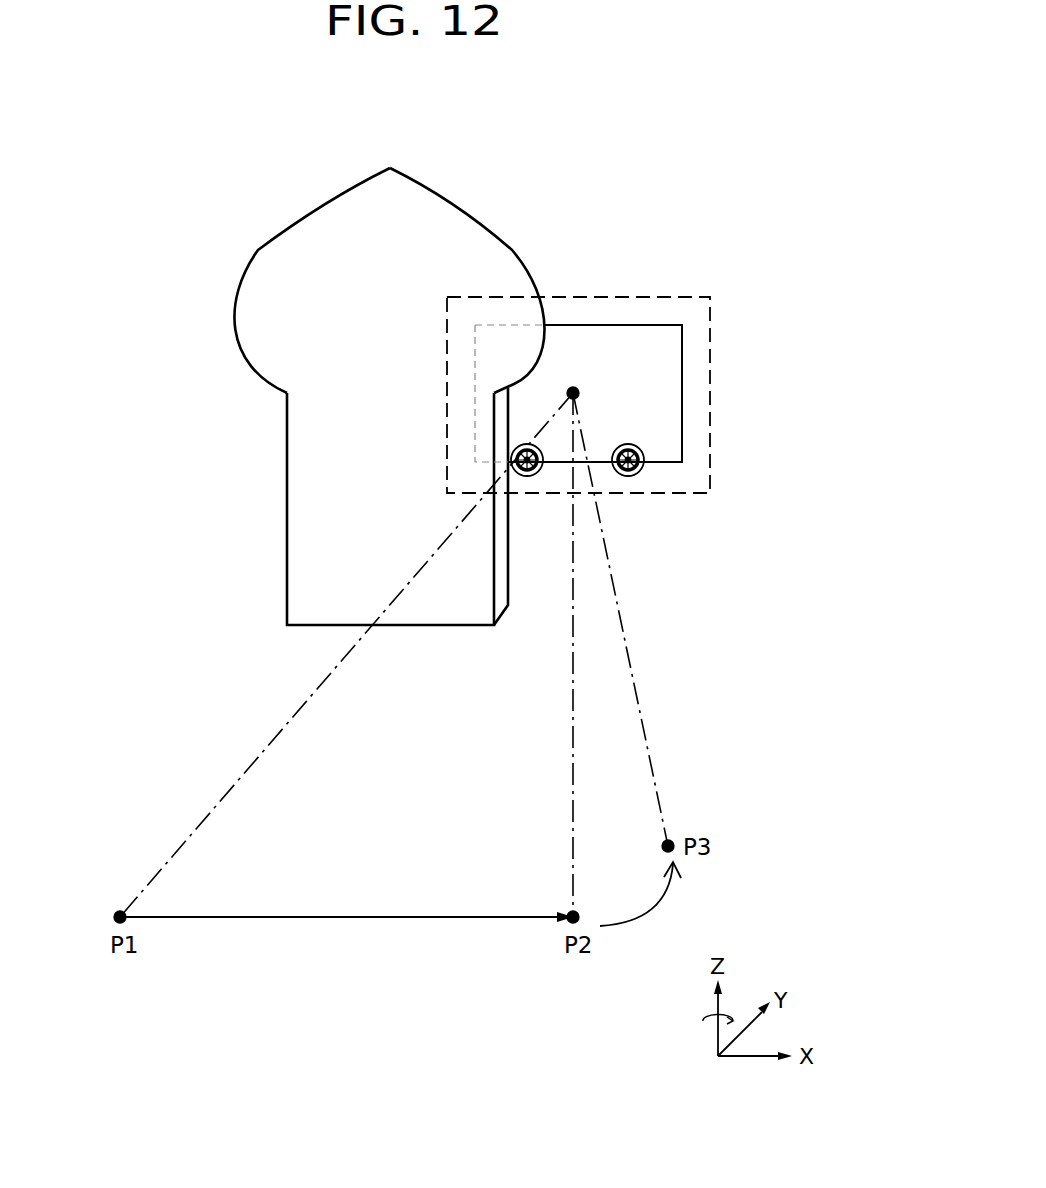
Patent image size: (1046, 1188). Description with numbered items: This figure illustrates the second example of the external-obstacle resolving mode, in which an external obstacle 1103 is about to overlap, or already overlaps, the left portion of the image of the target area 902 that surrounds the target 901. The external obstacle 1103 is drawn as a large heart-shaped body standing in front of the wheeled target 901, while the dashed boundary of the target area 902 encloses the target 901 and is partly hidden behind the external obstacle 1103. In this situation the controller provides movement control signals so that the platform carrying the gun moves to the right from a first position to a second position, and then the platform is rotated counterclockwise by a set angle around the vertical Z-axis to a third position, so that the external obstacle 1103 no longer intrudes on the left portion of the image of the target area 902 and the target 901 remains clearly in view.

The external obstacle 1103 is at (495, 233).
The target 901 is at (682, 393).
The target area 902 is at (653, 295).